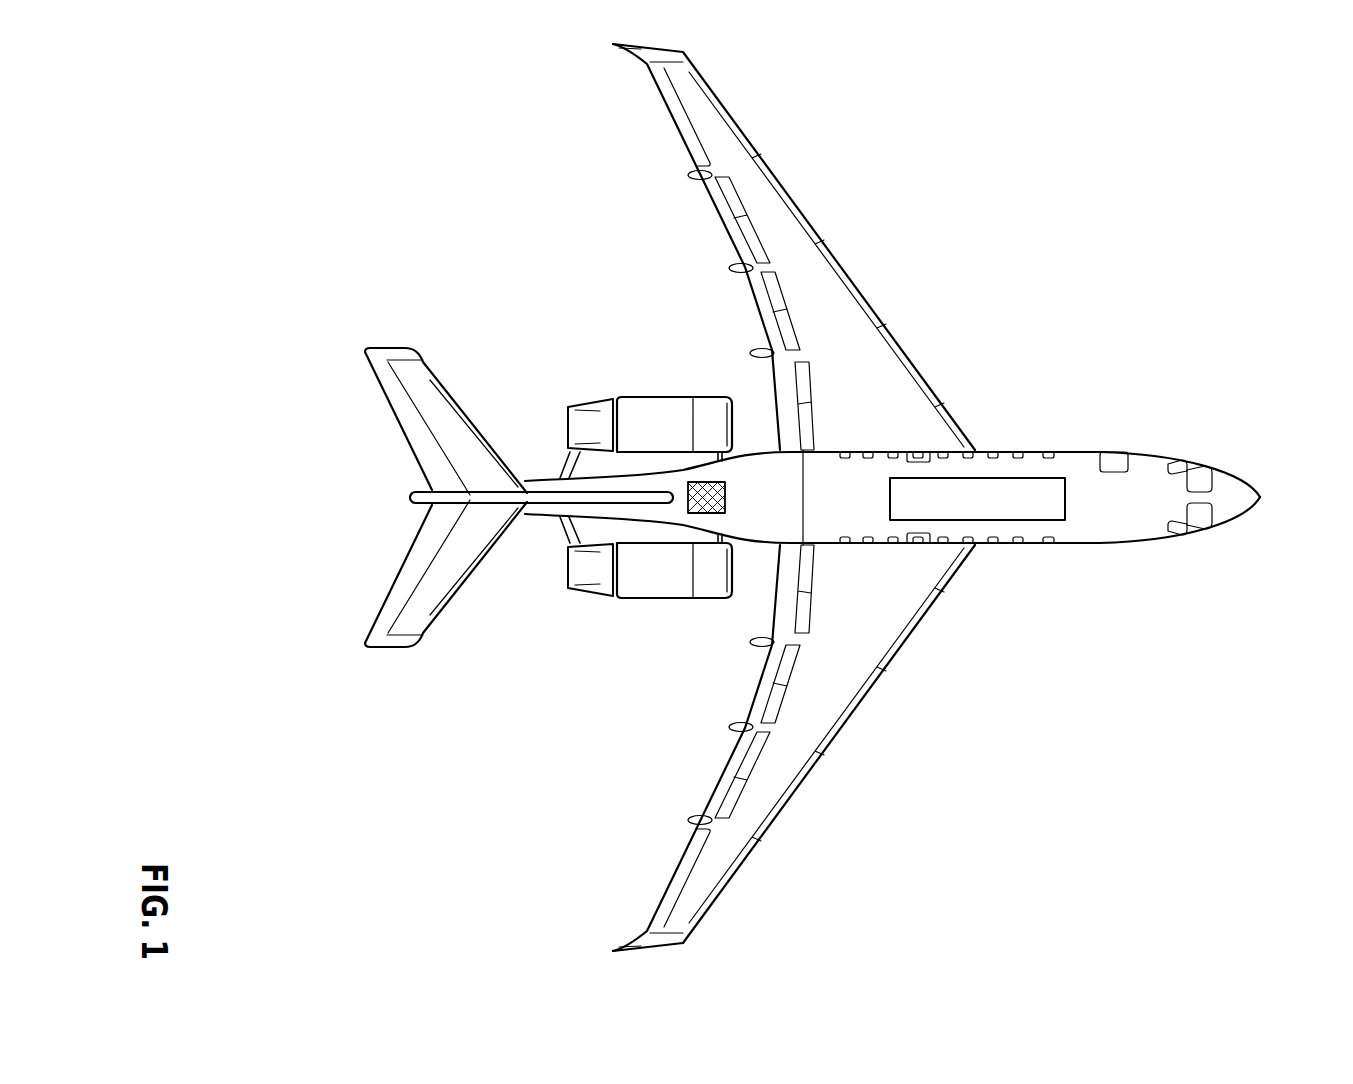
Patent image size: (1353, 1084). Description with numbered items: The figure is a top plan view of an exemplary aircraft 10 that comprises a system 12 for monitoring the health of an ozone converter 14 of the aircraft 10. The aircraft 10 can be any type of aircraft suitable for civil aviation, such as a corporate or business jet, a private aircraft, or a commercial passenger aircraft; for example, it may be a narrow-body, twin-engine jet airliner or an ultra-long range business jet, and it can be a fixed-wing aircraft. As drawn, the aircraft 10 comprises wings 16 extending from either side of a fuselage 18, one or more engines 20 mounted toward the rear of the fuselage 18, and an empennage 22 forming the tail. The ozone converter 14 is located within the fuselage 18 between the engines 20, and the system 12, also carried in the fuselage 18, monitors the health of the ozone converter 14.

The aircraft 10 is at (1094, 116).
The system 12 is at (1047, 518).
The ozone converter 14 is at (705, 482).
The wings 16 is at (903, 255).
The fuselage 18 is at (1085, 537).
The engines 20 is at (637, 407).
The empennage 22 is at (360, 420).